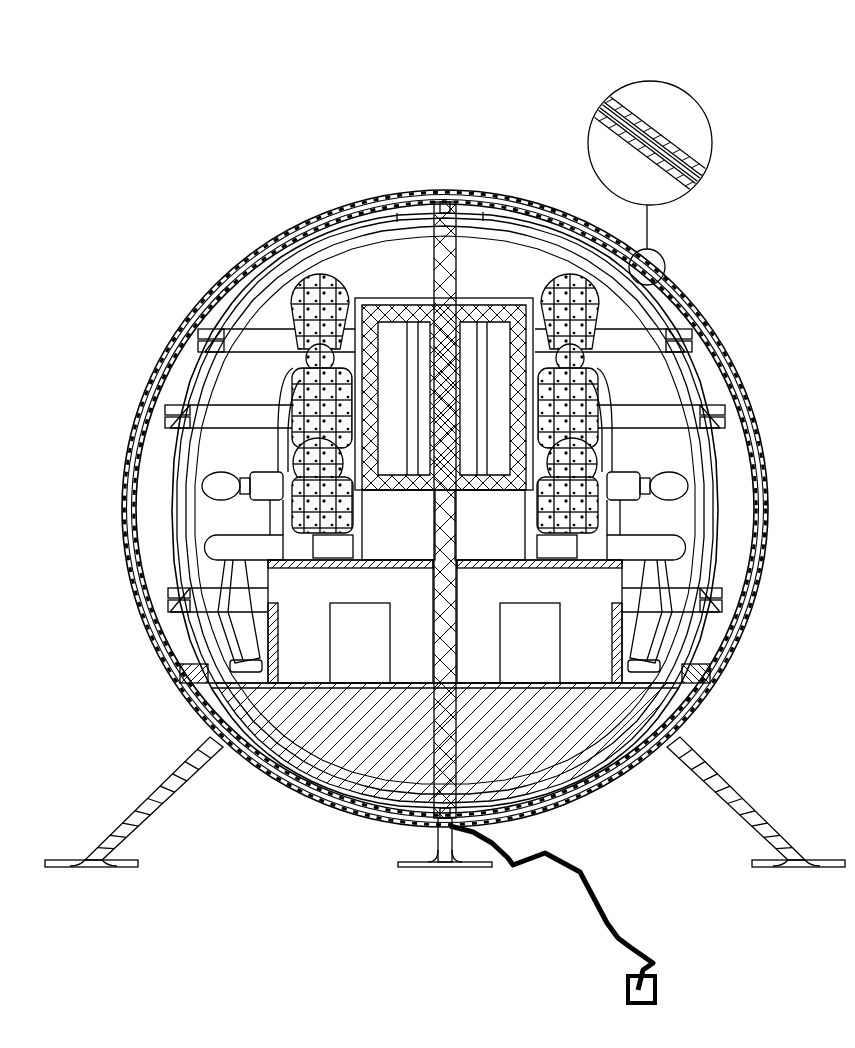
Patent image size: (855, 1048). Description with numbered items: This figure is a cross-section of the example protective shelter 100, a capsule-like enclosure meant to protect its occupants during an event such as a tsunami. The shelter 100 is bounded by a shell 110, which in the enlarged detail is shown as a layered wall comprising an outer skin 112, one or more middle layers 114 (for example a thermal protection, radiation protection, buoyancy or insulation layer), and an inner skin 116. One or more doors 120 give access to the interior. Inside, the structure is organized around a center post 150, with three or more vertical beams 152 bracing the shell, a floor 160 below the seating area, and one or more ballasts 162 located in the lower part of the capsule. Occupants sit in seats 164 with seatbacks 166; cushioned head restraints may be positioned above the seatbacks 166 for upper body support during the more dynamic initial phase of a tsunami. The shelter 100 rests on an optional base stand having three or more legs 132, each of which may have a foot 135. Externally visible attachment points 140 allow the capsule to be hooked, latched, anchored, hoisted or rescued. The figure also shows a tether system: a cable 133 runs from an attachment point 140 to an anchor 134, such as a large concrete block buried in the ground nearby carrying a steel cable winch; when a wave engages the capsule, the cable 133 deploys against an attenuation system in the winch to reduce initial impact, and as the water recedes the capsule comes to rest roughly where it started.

The protective shelter 100 is at (445, 516).
The shell 110 is at (698, 305).
The outer skin 112 is at (690, 160).
The middle layer 114 is at (653, 138).
The inner skin 116 is at (612, 112).
The door 120 is at (435, 268).
The leg 132 is at (718, 800).
The cable 133 is at (605, 928).
The anchor 134 is at (658, 982).
The foot 135 is at (812, 868).
The attachment point 140 is at (447, 193).
The center post 150 is at (392, 218).
The vertical beam 152 is at (397, 220).
The floor 160 is at (262, 768).
The ballast 162 is at (287, 742).
The seat 164 is at (445, 621).
The seatback 166 is at (443, 525).